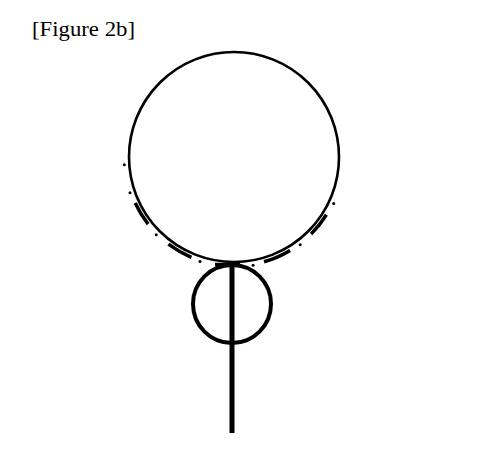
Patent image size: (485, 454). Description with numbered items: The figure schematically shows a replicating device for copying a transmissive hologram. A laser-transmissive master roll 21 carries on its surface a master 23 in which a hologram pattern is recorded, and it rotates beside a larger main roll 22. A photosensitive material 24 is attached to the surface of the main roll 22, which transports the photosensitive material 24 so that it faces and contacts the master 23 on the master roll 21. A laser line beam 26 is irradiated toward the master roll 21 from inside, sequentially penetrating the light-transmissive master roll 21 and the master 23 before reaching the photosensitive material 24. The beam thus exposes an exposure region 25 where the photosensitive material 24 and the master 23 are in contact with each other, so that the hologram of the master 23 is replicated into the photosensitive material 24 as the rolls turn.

The master roll 21 is at (245, 305).
The main roll 22 is at (233, 163).
The master 23 is at (262, 272).
The photosensitive material 24 is at (318, 220).
The exposure region 25 is at (215, 257).
The laser line beam 26 is at (232, 388).